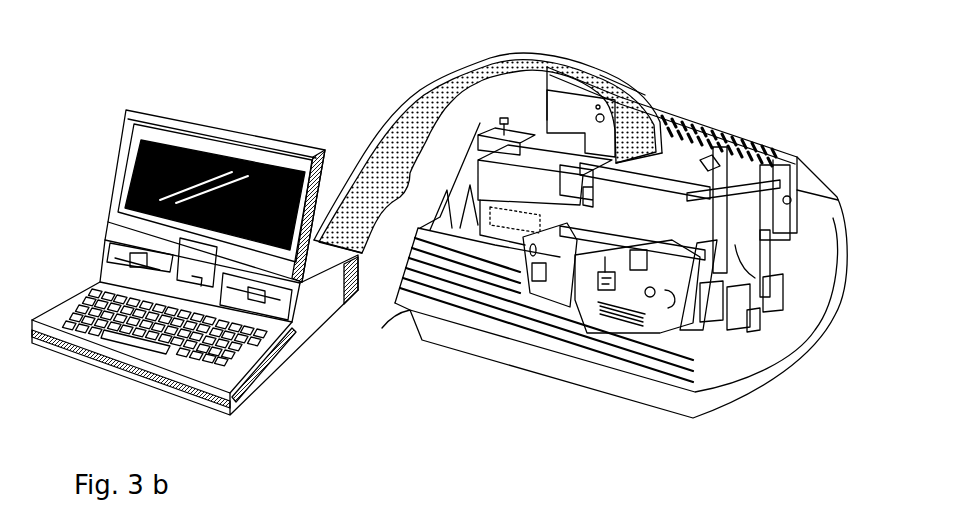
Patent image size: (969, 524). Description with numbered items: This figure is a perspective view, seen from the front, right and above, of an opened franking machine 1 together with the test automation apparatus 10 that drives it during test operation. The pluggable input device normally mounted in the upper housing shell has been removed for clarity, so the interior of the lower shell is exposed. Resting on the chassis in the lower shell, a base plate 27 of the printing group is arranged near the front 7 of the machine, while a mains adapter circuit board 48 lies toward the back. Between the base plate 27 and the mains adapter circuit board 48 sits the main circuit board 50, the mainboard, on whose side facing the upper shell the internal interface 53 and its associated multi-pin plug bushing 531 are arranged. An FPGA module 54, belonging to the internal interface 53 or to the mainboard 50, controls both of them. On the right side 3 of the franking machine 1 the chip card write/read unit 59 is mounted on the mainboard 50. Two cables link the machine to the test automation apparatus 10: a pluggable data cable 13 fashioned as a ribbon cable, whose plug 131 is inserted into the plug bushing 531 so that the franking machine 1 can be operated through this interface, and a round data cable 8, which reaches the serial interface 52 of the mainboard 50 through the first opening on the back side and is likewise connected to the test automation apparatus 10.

The franking machine 1 is at (811, 69).
The right side 3 is at (783, 340).
The front 7 is at (457, 333).
The data cable 8 is at (402, 117).
The test automation apparatus 10 is at (247, 97).
The data cable 13 is at (607, 73).
The base plate 27 is at (743, 285).
The mains adapter circuit board 48 is at (700, 123).
The main circuit board 50 is at (723, 203).
The serial interface 52 is at (525, 218).
The internal interface 53 is at (680, 228).
The multi-pin plug bushing 531 is at (690, 207).
The FPGA module 54 is at (575, 175).
The chip card write/read unit 59 is at (740, 256).
The plug 131 is at (695, 172).